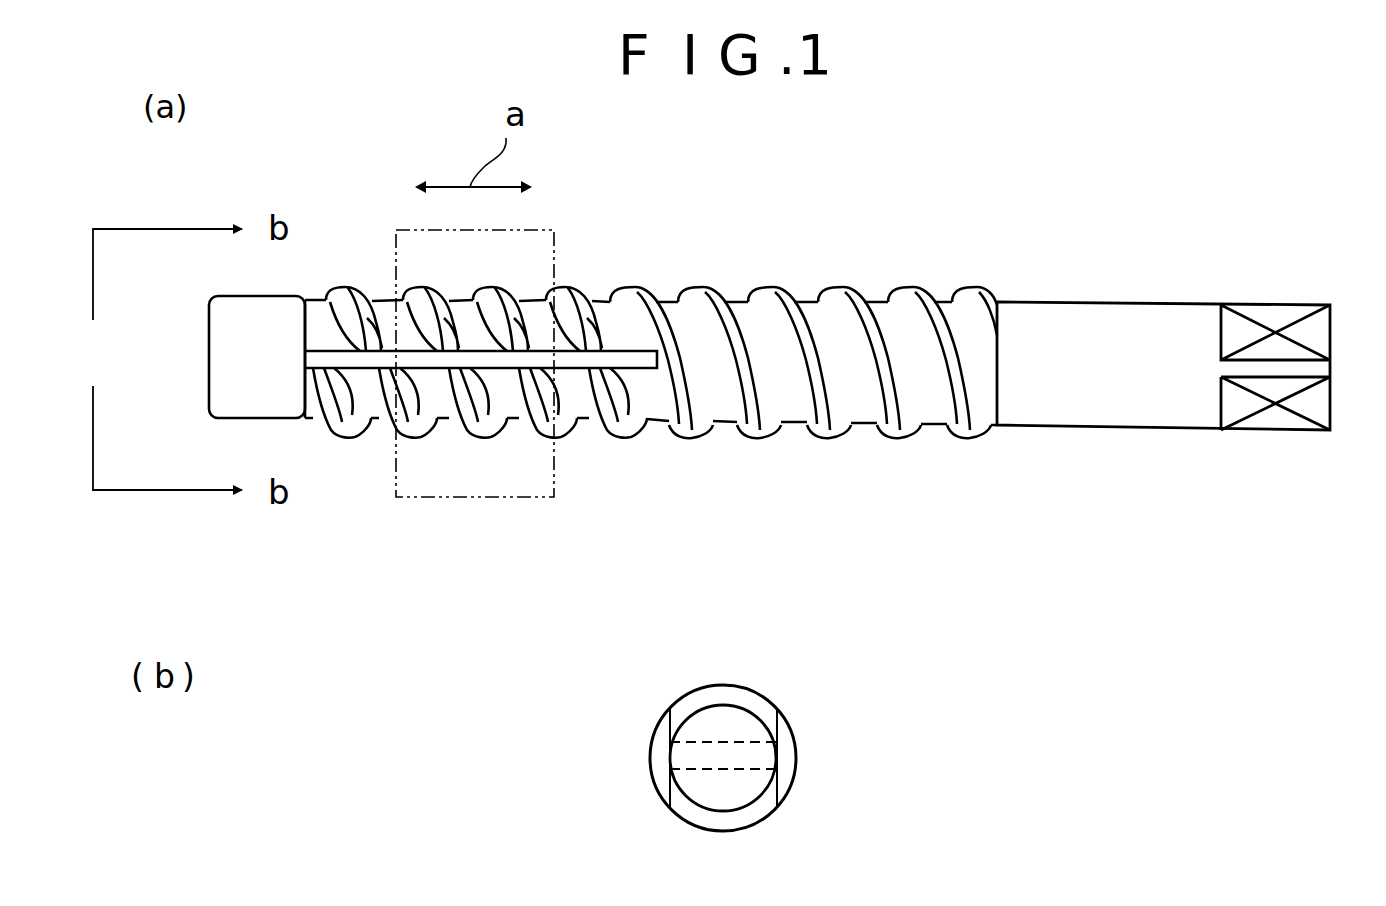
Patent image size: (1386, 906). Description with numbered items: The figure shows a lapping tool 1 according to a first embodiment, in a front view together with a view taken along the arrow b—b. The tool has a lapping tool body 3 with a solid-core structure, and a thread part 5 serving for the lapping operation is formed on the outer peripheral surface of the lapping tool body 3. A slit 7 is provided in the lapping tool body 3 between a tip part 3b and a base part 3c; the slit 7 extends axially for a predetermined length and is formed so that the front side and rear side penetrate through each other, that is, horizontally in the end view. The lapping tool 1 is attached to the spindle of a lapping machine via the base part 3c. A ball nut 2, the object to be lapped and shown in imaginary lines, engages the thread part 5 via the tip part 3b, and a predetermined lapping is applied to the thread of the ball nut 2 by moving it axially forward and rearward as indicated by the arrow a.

The lapping tool 1 is at (769, 489).
The ball nut 2 is at (555, 264).
The lapping tool body 3 is at (817, 555).
The tip part 3b is at (260, 306).
The base part 3c is at (1268, 432).
The thread part 5 is at (934, 291).
The slit 7 is at (573, 372).